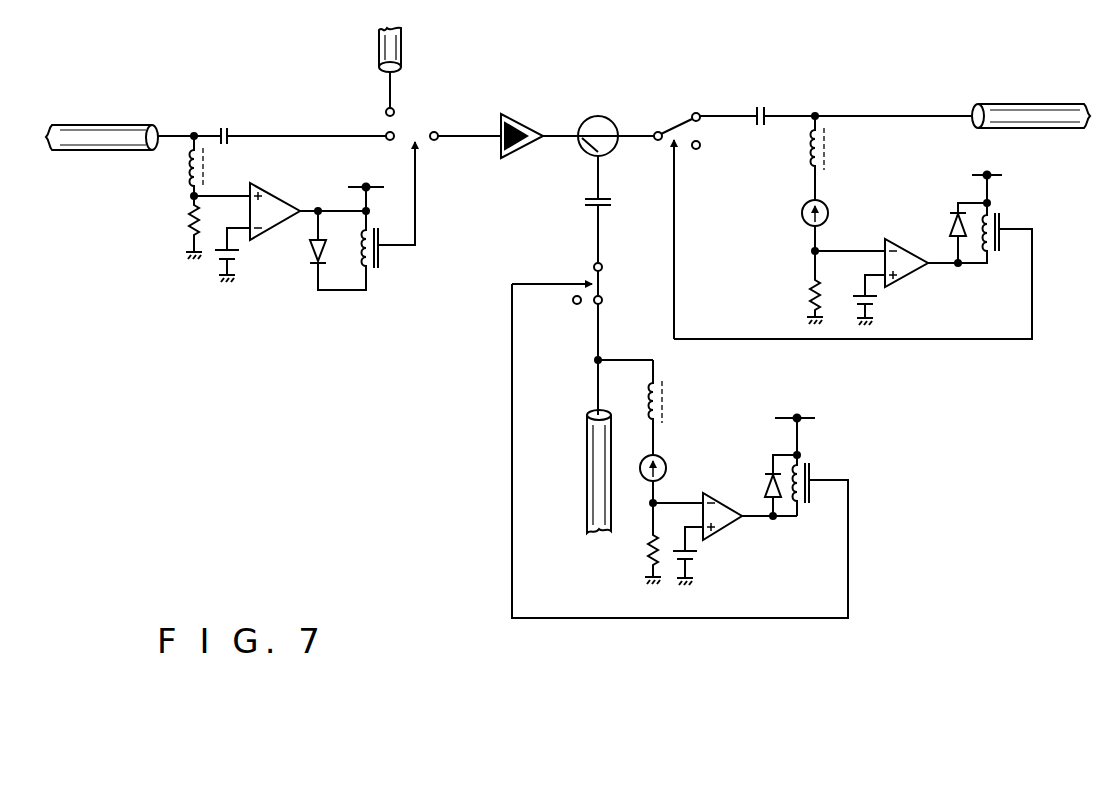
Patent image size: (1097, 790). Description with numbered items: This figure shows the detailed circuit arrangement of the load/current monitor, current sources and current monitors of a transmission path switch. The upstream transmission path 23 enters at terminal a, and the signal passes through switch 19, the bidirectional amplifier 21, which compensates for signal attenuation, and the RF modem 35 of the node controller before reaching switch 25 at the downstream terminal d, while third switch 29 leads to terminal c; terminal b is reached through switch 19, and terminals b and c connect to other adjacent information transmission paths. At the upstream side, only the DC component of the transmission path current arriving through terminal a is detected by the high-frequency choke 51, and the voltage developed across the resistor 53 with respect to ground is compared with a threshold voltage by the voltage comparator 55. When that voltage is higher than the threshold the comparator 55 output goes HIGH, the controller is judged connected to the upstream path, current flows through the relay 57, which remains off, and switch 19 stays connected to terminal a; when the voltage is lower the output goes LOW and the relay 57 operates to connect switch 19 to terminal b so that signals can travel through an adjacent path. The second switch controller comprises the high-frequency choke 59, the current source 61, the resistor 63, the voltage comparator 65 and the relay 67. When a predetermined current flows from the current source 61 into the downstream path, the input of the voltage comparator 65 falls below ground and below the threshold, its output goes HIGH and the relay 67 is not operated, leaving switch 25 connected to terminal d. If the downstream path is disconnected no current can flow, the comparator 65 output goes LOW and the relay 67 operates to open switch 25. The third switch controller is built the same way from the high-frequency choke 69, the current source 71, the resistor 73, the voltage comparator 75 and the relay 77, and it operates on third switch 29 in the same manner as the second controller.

The transmission path 23 is at (98, 124).
The terminal a is at (152, 126).
The terminal b is at (403, 53).
The terminal c is at (588, 423).
The terminal d is at (973, 104).
The switch 19 is at (355, 112).
The bidirectional amplifier 21 is at (508, 80).
The switch 25 is at (670, 120).
The third switch 29 is at (565, 262).
The RF modem 35 is at (605, 117).
The high-frequency choke 51 is at (205, 172).
The resistor 53 is at (187, 240).
The voltage comparator 55 is at (284, 225).
The relay 57 is at (350, 290).
The high-frequency choke 59 is at (830, 151).
The current source 61 is at (777, 220).
The resistor 63 is at (806, 298).
The voltage comparator 65 is at (916, 272).
The relay 67 is at (995, 193).
The high-frequency choke 69 is at (665, 405).
The current source 71 is at (668, 467).
The resistor 73 is at (648, 558).
The voltage comparator 75 is at (732, 507).
The relay 77 is at (802, 465).